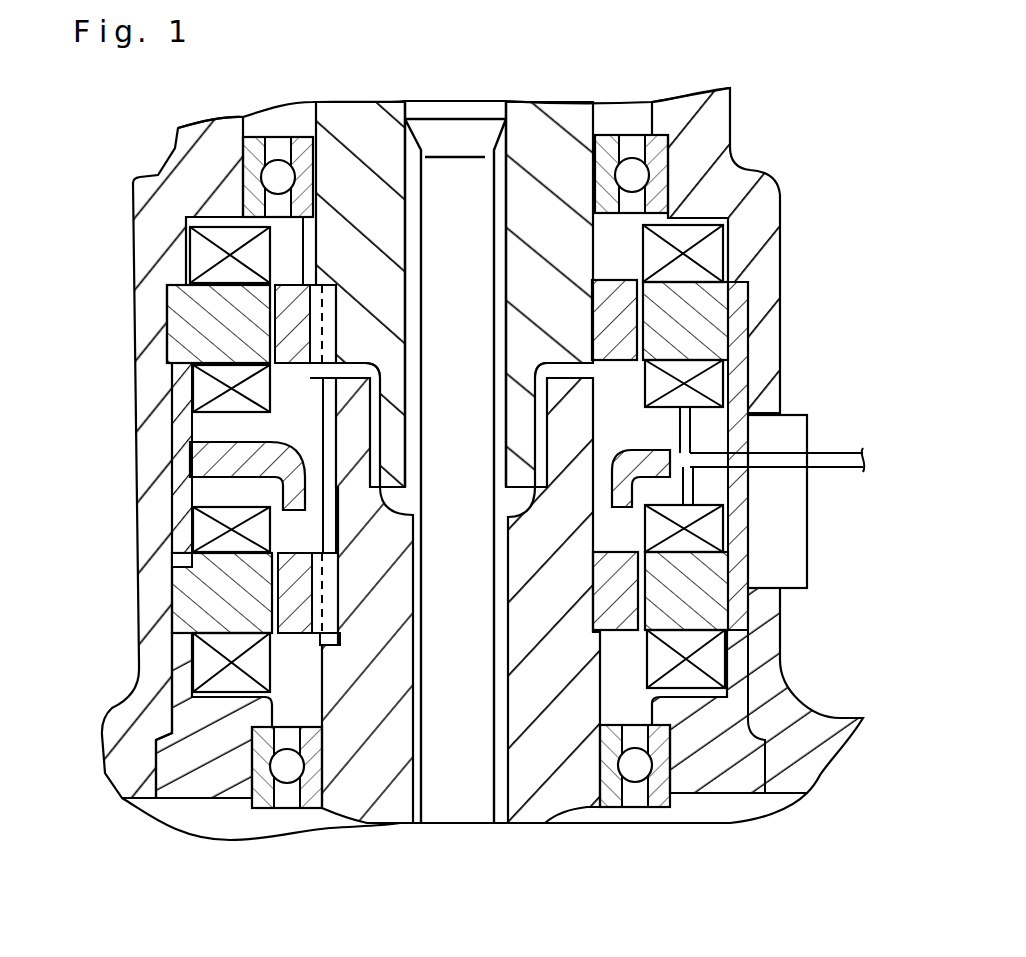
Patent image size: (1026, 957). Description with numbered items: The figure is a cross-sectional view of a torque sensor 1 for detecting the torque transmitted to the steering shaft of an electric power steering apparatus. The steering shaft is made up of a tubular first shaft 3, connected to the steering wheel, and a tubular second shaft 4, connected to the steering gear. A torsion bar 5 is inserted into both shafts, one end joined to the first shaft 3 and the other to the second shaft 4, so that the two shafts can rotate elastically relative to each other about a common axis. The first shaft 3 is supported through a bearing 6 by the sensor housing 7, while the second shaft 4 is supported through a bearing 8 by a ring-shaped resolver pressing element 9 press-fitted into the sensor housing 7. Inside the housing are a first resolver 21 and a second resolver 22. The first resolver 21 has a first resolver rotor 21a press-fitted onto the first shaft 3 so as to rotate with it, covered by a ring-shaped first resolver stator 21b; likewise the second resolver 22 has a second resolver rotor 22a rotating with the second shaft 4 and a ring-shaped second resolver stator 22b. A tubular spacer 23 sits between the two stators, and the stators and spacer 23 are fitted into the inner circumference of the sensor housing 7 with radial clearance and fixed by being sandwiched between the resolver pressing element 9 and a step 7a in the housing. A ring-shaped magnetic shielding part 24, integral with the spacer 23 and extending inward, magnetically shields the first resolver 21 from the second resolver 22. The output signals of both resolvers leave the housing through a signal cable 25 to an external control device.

The torque sensor 1 is at (756, 240).
The first shaft 3 is at (542, 140).
The second shaft 4 is at (543, 800).
The torsion bar 5 is at (458, 785).
The bearing 6 is at (637, 175).
The sensor housing 7 is at (753, 207).
The step 7a is at (750, 295).
The bearing 8 is at (638, 772).
The resolver pressing element 9 is at (735, 717).
The first resolver 21 is at (195, 326).
The first resolver rotor 21a is at (620, 320).
The first resolver stator 21b is at (737, 338).
The second resolver 22 is at (195, 595).
The second resolver rotor 22a is at (620, 597).
The second resolver stator 22b is at (728, 573).
The spacer 23 is at (177, 508).
The magnetic shielding part 24 is at (257, 465).
The signal cable 25 is at (830, 457).